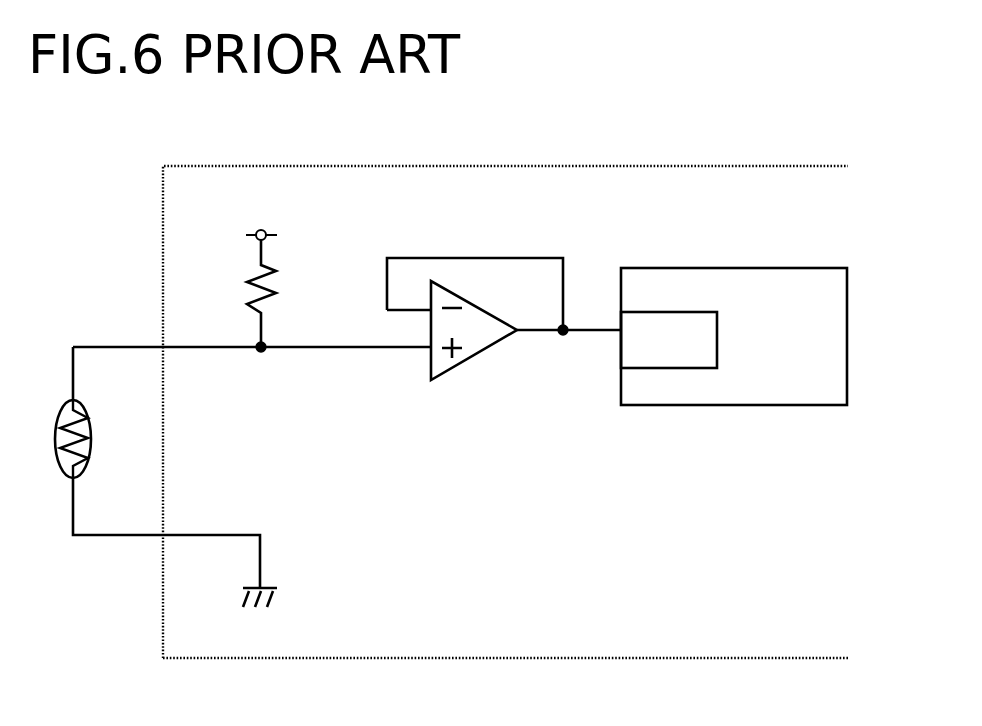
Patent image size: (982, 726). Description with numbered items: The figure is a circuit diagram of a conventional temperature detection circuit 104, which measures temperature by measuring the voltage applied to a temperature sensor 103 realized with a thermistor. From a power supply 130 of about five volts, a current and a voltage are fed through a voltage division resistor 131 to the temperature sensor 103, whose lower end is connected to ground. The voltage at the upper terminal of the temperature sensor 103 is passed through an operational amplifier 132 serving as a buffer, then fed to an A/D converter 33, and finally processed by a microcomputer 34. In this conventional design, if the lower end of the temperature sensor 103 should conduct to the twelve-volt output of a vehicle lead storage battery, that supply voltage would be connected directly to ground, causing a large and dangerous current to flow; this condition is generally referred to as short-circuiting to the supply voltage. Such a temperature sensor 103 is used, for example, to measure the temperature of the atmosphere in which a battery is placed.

The temperature detection circuit 104 is at (407, 658).
The temperature sensor 103 is at (93, 457).
The power supply 130 is at (267, 230).
The voltage division resistor 131 is at (275, 278).
The operational amplifier 132 is at (468, 362).
The microcomputer 34 is at (847, 283).
The A/D converter 33 is at (667, 368).